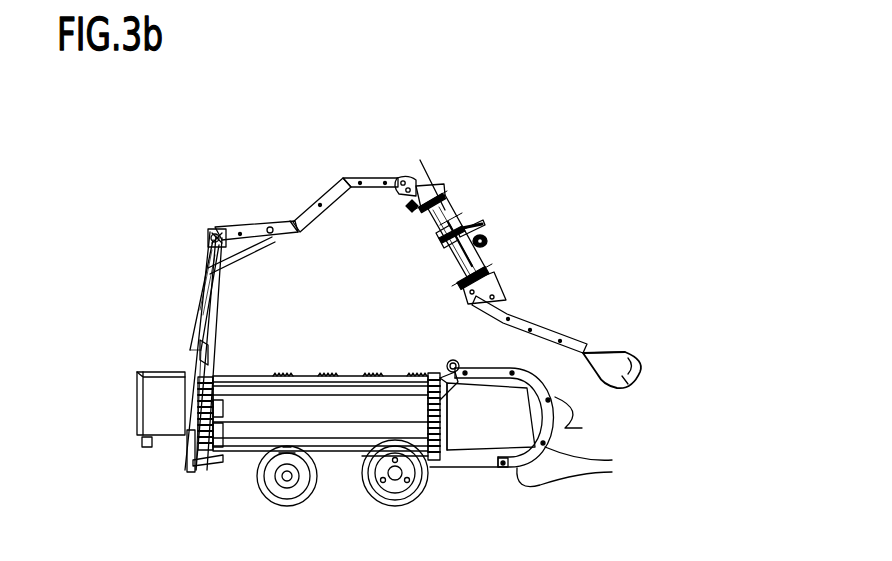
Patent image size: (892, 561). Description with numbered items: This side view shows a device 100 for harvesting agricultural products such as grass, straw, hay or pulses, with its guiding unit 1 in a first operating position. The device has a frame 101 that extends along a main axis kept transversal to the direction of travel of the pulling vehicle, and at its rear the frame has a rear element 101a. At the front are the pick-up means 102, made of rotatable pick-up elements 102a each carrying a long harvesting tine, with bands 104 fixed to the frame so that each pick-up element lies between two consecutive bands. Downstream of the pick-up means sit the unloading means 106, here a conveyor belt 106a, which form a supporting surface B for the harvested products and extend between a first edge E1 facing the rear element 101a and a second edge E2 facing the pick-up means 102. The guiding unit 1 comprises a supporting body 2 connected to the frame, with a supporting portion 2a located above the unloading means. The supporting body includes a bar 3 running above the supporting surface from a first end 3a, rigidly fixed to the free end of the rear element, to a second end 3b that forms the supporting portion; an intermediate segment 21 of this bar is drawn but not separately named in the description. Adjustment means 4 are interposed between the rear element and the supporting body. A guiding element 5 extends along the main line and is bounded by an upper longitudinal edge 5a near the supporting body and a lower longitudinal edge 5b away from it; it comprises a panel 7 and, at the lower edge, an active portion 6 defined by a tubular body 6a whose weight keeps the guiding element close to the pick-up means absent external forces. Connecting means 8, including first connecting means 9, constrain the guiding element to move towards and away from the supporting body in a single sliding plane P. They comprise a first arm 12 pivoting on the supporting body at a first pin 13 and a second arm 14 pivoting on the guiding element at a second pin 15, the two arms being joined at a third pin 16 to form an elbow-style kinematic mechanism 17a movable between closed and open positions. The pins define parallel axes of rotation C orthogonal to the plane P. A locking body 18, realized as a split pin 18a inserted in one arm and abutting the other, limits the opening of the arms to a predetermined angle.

The device for harvesting agricultural products 100 is at (165, 243).
The frame 101 is at (170, 442).
The rear element 101a is at (195, 345).
The pick-up means 102 is at (488, 483).
The rotatable pick-up elements 102a is at (568, 432).
The bands 104 is at (560, 398).
The unloading means 106 is at (195, 465).
The conveyor belt 106a is at (267, 410).
The guiding unit 1 is at (342, 170).
The supporting body 2 is at (296, 200).
The supporting portion 2a is at (392, 172).
The inclined arm segment 21 is at (306, 214).
The bar 3 is at (205, 225).
The first end 3a is at (222, 230).
The second end 3b is at (442, 200).
The adjustment means 4 is at (245, 234).
The guiding element 5 is at (583, 333).
The upper longitudinal edge 5a is at (497, 285).
The lower longitudinal edge 5b is at (627, 350).
The active portion 6 is at (632, 370).
The tubular body 6a is at (625, 387).
The panel 7 is at (540, 325).
The connecting means 8 is at (469, 206).
The first connecting means 9 is at (404, 205).
The first arm 12 is at (420, 210).
The first pin 13 is at (446, 194).
The second arm 14 is at (439, 257).
The second pin 15 is at (455, 288).
The third pin 16 is at (440, 247).
The elbow-style kinematic mechanism 17a is at (495, 223).
The locking body 18 is at (498, 247).
The split pin 18a is at (483, 223).
The supporting surface B is at (264, 376).
The axes of rotation C is at (453, 192).
The sliding plane P is at (425, 195).
The first edge E1 is at (190, 386).
The second edge E2 is at (432, 395).